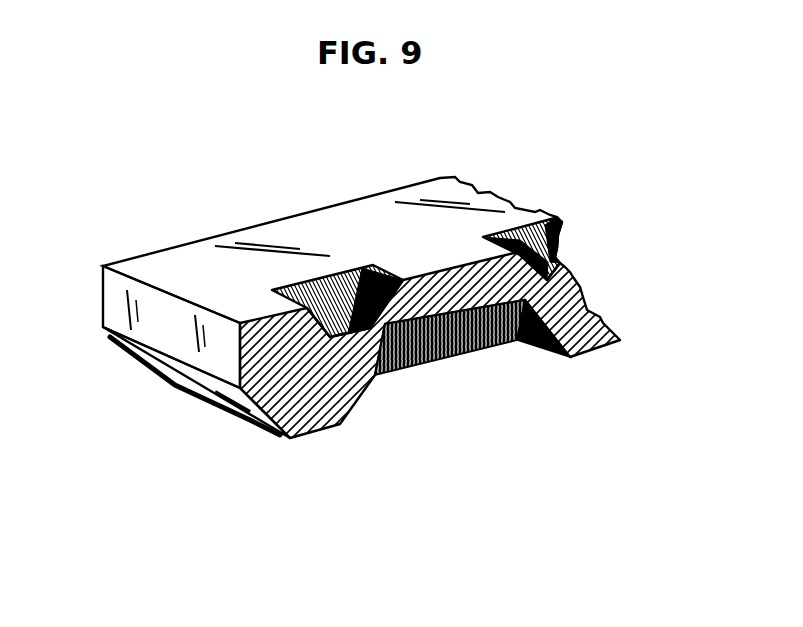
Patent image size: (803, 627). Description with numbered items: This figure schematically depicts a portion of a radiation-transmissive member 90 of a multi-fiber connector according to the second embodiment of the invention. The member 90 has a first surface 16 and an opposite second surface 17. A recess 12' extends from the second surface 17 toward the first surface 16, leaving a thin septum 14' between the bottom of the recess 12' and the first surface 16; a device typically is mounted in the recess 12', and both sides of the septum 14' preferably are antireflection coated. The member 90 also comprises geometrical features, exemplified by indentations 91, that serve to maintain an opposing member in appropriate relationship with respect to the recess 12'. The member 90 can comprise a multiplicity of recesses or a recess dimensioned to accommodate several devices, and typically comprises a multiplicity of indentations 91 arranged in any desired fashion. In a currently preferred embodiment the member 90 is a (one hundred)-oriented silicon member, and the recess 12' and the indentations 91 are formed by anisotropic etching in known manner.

The radiation-transmissive member 90 is at (469, 142).
The first surface 16 is at (190, 258).
The indentations 91 is at (352, 268).
The septum 14' is at (430, 344).
The recess 12' is at (472, 378).
The second surface 17 is at (330, 432).